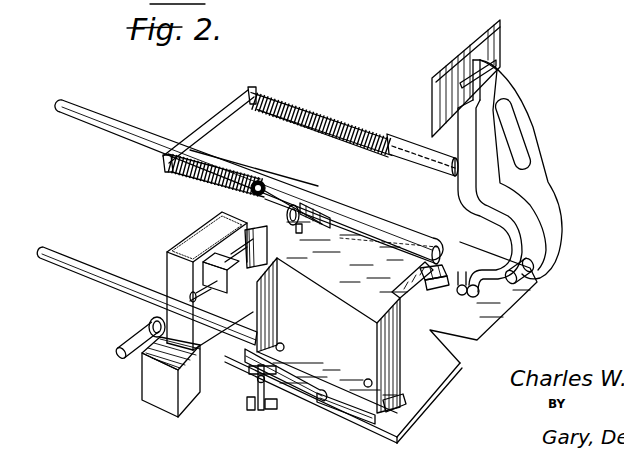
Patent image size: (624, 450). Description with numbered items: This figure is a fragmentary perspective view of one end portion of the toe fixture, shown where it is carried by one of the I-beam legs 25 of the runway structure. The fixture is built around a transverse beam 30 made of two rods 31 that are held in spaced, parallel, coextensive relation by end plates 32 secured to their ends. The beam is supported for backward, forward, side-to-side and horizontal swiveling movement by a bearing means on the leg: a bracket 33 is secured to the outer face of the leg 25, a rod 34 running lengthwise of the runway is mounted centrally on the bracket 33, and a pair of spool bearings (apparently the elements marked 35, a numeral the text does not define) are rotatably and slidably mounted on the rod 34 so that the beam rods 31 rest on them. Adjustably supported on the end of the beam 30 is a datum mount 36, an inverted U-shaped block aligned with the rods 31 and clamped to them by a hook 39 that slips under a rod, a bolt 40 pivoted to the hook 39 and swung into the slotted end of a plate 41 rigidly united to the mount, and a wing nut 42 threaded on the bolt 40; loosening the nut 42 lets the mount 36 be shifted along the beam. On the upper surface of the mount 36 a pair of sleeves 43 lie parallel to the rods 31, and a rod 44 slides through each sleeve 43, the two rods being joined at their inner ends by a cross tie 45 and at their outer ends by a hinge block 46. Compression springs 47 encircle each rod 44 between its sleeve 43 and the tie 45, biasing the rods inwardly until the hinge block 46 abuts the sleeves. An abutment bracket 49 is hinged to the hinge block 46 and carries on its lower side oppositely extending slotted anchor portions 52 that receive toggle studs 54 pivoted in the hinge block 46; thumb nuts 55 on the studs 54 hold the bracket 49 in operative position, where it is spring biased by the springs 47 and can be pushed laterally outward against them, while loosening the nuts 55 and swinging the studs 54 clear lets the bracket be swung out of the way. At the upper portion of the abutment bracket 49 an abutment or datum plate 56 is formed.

The I-beam leg 25 is at (173, 263).
The transverse beam 30 is at (171, 116).
The rod 31 is at (88, 118).
The end plate 32 is at (424, 385).
The bracket 33 is at (278, 229).
The rod 34 is at (116, 340).
The collar 35 is at (302, 229).
The datum mount 36 is at (390, 348).
The hook 39 is at (277, 397).
The bolt 40 is at (253, 385).
The plate 41 is at (253, 377).
The wing nut 42 is at (250, 362).
The sleeve 43 is at (396, 137).
The rod 44 is at (272, 180).
The cross tie 45 is at (216, 126).
The hinge block 46 is at (462, 222).
The compression spring 47 is at (262, 173).
The abutment bracket 49 is at (540, 180).
The anchor portion 52 is at (420, 273).
The toggle stud 54 is at (476, 297).
The thumb nut 55 is at (462, 296).
The datum plate 56 is at (435, 90).